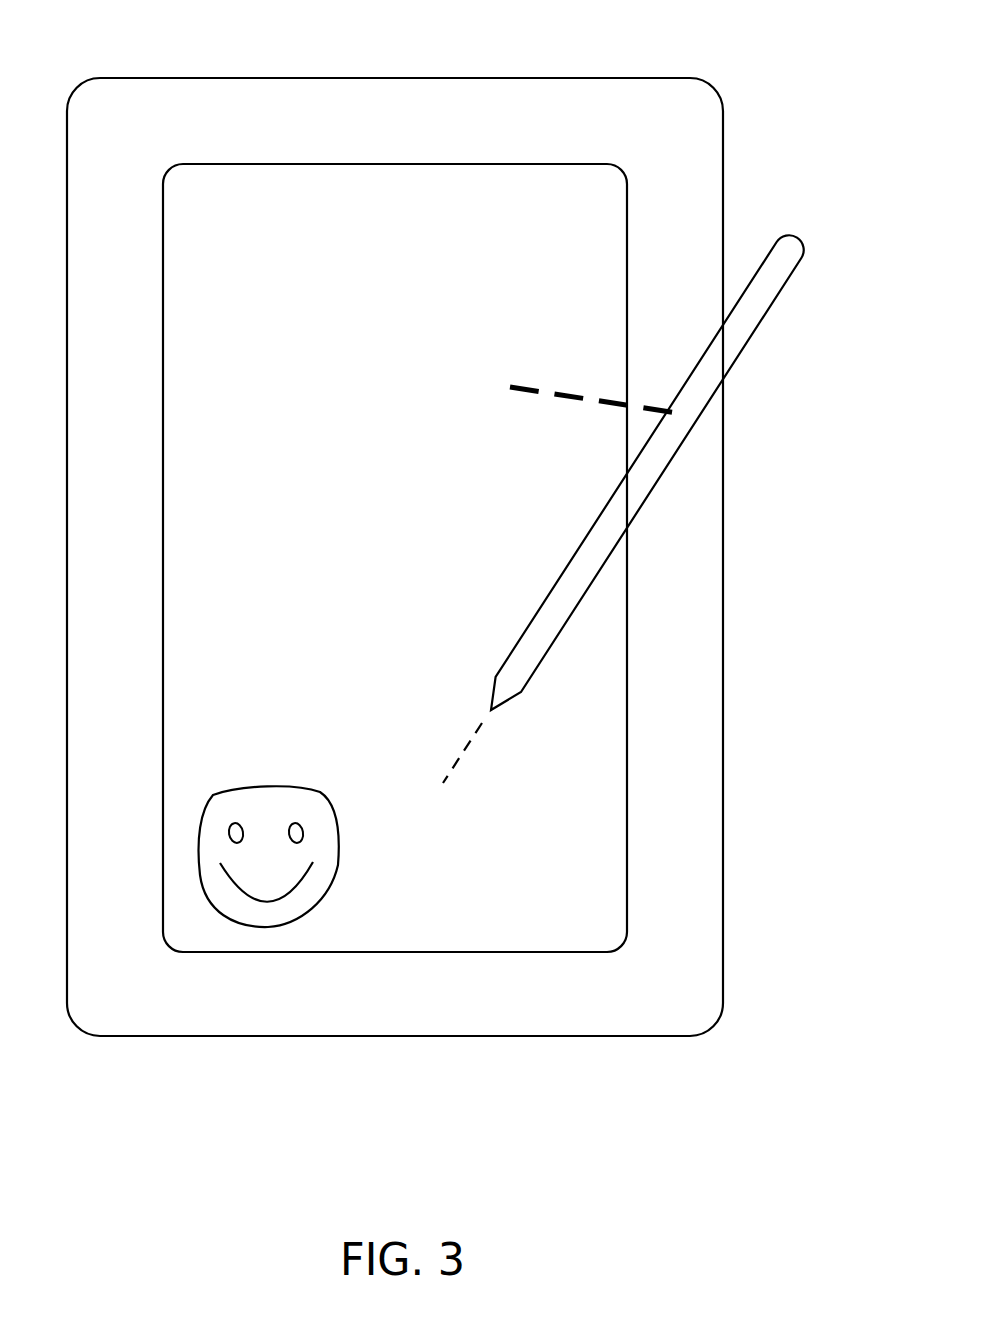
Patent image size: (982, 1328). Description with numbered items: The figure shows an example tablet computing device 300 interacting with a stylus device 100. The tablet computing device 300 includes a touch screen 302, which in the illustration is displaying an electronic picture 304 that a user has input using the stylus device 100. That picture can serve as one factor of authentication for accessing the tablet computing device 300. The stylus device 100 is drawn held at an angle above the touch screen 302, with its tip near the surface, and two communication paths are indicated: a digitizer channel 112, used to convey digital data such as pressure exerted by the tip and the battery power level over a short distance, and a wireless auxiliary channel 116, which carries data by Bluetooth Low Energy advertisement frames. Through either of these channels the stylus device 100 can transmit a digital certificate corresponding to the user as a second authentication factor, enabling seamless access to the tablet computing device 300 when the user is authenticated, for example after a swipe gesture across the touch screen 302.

The tablet computing device 300 is at (207, 77).
The touch screen 302 is at (260, 162).
The electronic picture 304 is at (277, 787).
The stylus device 100 is at (770, 310).
The wireless auxiliary channel 116 is at (568, 395).
The digitizer channel 112 is at (470, 742).